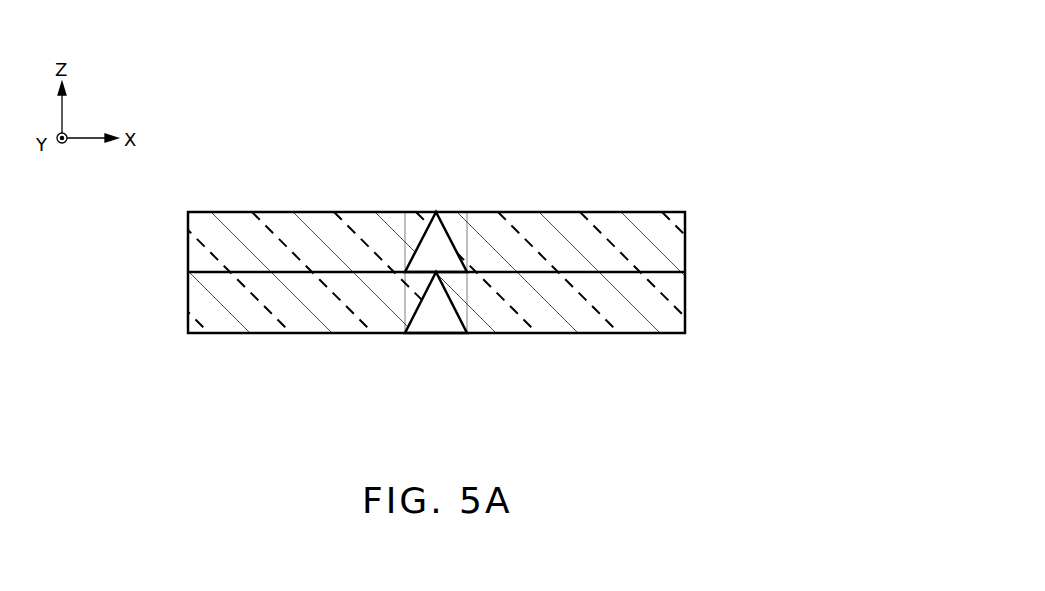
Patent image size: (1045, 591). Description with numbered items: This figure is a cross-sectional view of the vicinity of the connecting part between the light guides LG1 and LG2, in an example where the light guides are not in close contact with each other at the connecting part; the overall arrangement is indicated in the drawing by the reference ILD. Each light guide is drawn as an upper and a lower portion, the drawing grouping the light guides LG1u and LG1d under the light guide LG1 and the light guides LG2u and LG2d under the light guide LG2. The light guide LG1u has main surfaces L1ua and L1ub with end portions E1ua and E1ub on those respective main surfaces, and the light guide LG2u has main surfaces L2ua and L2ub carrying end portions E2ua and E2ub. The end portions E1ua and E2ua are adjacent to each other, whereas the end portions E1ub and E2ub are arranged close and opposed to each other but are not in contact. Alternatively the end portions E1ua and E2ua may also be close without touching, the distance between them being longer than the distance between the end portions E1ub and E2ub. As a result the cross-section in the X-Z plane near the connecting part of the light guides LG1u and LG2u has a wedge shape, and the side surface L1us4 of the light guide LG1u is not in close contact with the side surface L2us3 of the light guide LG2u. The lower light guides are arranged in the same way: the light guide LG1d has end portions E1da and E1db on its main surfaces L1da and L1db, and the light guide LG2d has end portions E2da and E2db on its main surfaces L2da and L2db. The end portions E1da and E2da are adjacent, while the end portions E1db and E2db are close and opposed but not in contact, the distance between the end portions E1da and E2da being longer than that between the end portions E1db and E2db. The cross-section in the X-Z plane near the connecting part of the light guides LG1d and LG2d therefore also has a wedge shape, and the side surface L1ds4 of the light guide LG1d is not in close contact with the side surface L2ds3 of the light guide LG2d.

The interlayer laminated light guide device ILD is at (668, 58).
The light guide LG1 is at (100, 233).
The light guide LG1u is at (188, 256).
The light guide LG1d is at (188, 314).
The light guide LG2 is at (773, 228).
The light guide LG2u is at (688, 245).
The light guide LG2d is at (688, 305).
The main surface L1ua is at (218, 232).
The main surface L1ub is at (272, 272).
The side surface L1us4 is at (418, 248).
The end portion E1ua is at (436, 212).
The end portion E1ub is at (403, 271).
The end portion E2ua is at (436, 212).
The end portion E2ub is at (467, 271).
The side surface L2us3 is at (455, 248).
The main surface L2ua is at (607, 232).
The main surface L2ub is at (658, 272).
The main surface L1da is at (251, 272).
The main surface L1db is at (209, 333).
The side surface L1ds4 is at (415, 310).
The end portion E1da is at (436, 275).
The end portion E1db is at (404, 334).
The end portion E2da is at (437, 275).
The end portion E2db is at (466, 335).
The side surface L2ds3 is at (457, 310).
The main surface L2da is at (622, 272).
The main surface L2db is at (665, 333).